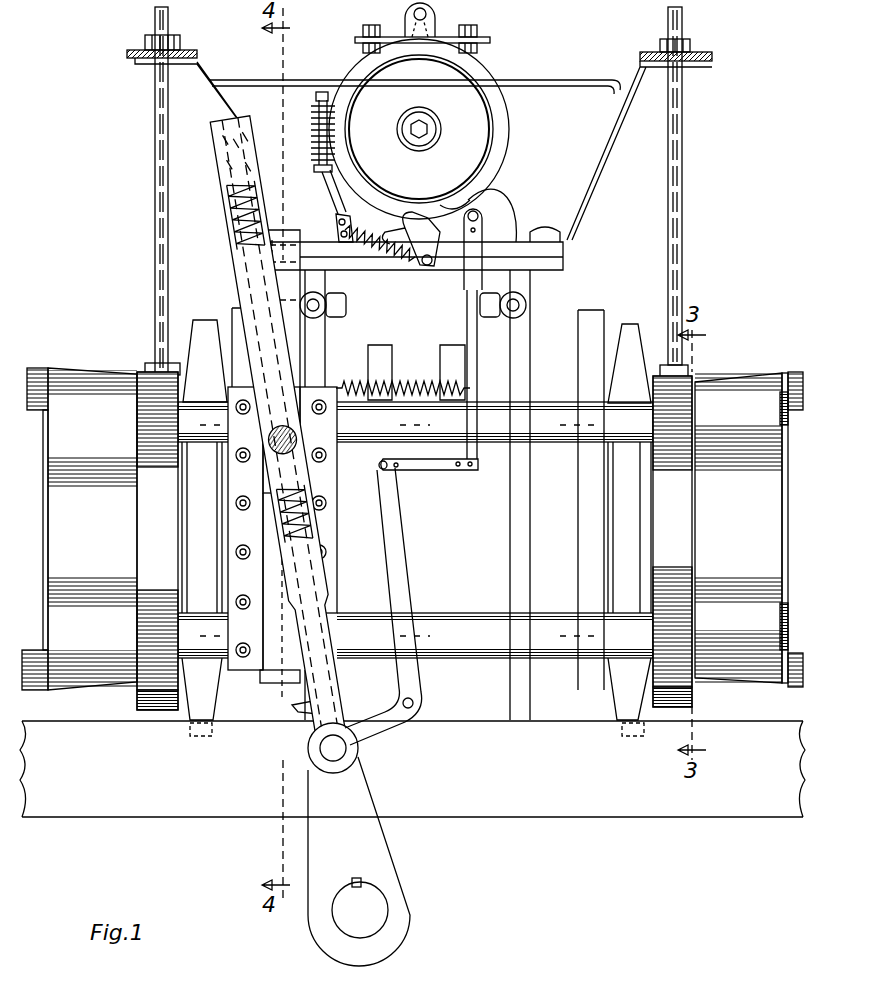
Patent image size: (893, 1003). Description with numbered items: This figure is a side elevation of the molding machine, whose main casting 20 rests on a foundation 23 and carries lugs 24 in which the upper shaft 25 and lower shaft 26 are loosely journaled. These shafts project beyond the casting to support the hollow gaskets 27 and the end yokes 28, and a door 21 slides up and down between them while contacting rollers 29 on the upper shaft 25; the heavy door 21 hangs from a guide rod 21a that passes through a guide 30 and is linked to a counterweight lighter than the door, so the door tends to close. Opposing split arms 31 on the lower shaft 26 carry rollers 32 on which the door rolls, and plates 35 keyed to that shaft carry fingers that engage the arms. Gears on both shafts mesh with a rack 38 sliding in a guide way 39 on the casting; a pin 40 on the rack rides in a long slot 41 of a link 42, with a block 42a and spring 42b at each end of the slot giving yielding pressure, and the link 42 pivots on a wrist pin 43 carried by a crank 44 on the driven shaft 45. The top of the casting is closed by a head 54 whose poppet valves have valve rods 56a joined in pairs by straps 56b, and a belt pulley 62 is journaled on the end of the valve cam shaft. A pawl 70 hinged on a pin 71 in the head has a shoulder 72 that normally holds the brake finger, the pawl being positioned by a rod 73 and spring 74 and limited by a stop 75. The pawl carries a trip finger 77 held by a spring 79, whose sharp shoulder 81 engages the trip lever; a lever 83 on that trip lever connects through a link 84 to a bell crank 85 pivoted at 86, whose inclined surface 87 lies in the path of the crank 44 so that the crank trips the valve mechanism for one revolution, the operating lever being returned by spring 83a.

The main casting 20 is at (540, 404).
The door 21 is at (142, 493).
The guide rod 21a is at (158, 170).
The foundation 23 is at (607, 822).
The lug 24 is at (580, 472).
The upper shaft 25 is at (585, 348).
The lower shaft 26 is at (566, 640).
The hollow gasket 27 is at (186, 700).
The end yoke 28 is at (122, 376).
The roller 29 is at (156, 370).
The guide 30 is at (145, 44).
The split arm 31 is at (682, 712).
The roller 32 is at (468, 190).
The plate 35 is at (137, 700).
The rack 38 is at (262, 682).
The guide way 39 is at (300, 666).
The pin 40 is at (250, 462).
The long slot 41 is at (250, 292).
The link 42 is at (313, 577).
The block 42a is at (240, 254).
The spring 42b is at (230, 227).
The wrist pin 43 is at (326, 750).
The crank 44 is at (392, 844).
The shaft 45 is at (385, 908).
The head 54 is at (495, 192).
The valve rod 56a is at (366, 30).
The strap 56b is at (488, 43).
The belt pulley 62 is at (500, 126).
The pawl 70 is at (385, 232).
The pin 71 is at (480, 212).
The shoulder 72 is at (405, 226).
The rod 73 is at (336, 196).
The spring 74 is at (312, 138).
The stop 75 is at (322, 172).
The trip finger 77 is at (417, 212).
The spring 79 is at (382, 250).
The sharp shoulder 81 is at (483, 232).
The lever 83 is at (480, 262).
The spring 83a is at (415, 386).
The link 84 is at (417, 470).
The bell crank 85 is at (486, 305).
The pivot 86 is at (408, 710).
The inclined surface 87 is at (300, 712).